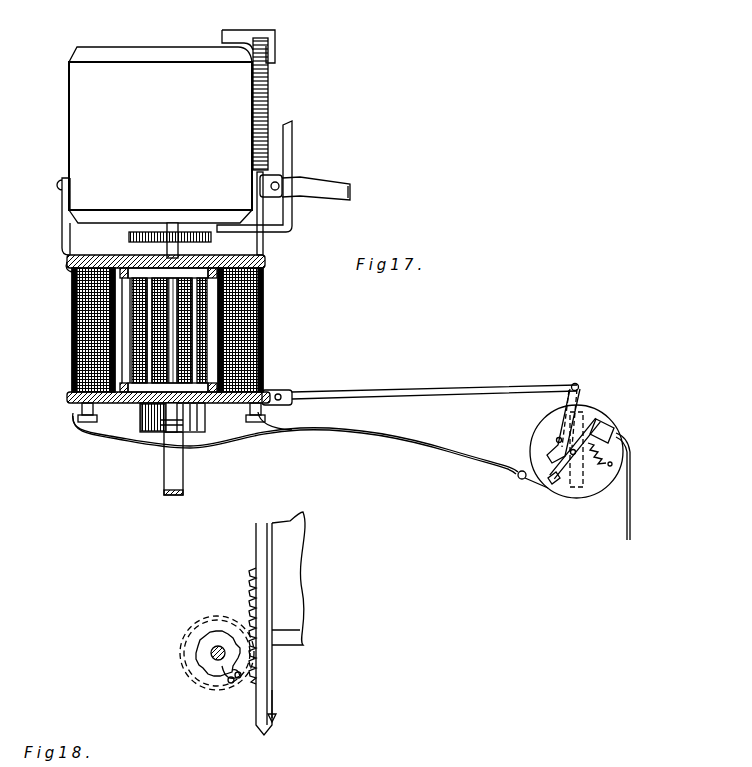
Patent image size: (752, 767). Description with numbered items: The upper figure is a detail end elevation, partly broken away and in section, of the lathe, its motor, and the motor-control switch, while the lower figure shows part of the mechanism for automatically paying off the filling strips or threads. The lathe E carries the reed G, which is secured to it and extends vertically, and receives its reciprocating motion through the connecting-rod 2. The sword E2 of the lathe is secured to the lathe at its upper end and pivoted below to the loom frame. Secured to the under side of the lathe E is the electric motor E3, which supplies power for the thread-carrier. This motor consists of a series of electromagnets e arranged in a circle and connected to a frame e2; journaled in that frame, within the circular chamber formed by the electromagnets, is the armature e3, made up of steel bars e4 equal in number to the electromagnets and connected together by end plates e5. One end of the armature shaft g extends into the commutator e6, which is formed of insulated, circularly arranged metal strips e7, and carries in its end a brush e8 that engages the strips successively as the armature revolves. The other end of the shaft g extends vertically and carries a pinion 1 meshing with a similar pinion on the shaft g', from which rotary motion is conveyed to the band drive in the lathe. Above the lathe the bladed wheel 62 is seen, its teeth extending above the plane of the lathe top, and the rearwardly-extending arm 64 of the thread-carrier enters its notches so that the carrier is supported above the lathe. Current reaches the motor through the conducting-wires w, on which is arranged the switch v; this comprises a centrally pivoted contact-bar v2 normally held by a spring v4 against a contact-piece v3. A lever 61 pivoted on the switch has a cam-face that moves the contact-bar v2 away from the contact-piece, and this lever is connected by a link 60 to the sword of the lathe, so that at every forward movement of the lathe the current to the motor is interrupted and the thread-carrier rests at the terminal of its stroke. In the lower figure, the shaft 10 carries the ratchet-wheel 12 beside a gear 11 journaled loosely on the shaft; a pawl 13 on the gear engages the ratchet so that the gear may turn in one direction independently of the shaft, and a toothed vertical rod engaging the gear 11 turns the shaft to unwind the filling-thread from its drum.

In FIG. 17, the rearwardly-extending arm 64 is at (275, 33).
In FIG. 17, the bladed wheel 62 is at (268, 108).
In FIG. 17, the reed G is at (292, 156).
In FIG. 17, the connecting-rod 2 is at (341, 188).
In FIG. 17, the lathe E is at (160, 135).
In FIG. 17, the shaft 1 is at (162, 232).
In FIG. 17, the pinion shaft g' is at (170, 214).
In FIG. 17, the end plates e5 is at (213, 262).
In FIG. 17, the frame e2 is at (68, 261).
In FIG. 17, the steel bars e4 is at (125, 352).
In FIG. 17, the electric motor E3 is at (215, 330).
In FIG. 17, the armature shaft g is at (229, 330).
In FIG. 17, the electromagnets e is at (73, 342).
In FIG. 17, the armature e3 is at (137, 404).
In FIG. 17, the commutator e6 is at (165, 432).
In FIG. 17, the metal strips e7 is at (200, 432).
In FIG. 17, the brush e8 is at (180, 427).
In FIG. 17, the sword of the lathe E2 is at (186, 489).
In FIG. 17, the link 60 is at (420, 390).
In FIG. 17, the lever 61 is at (560, 420).
In FIG. 17, the switch v is at (595, 414).
In FIG. 17, the contact-bar v2 is at (616, 428).
In FIG. 17, the contact-piece v3 is at (618, 438).
In FIG. 17, the spring v4 is at (600, 458).
In FIG. 17, the conducting-wires w is at (643, 497).
In FIG. 18, the gear 11 is at (252, 668).
In FIG. 18, the ratchet-wheel 12 is at (216, 636).
In FIG. 18, the shaft 10 is at (210, 654).
In FIG. 18, the pawl 13 is at (218, 682).